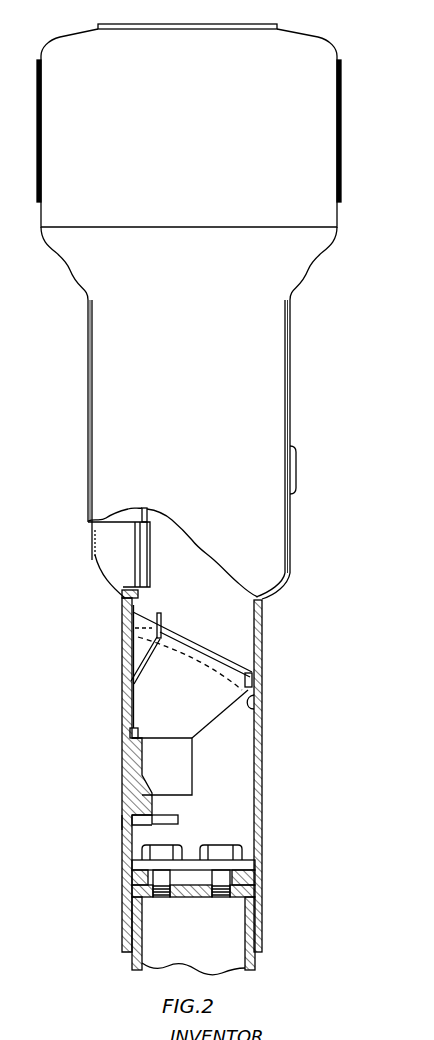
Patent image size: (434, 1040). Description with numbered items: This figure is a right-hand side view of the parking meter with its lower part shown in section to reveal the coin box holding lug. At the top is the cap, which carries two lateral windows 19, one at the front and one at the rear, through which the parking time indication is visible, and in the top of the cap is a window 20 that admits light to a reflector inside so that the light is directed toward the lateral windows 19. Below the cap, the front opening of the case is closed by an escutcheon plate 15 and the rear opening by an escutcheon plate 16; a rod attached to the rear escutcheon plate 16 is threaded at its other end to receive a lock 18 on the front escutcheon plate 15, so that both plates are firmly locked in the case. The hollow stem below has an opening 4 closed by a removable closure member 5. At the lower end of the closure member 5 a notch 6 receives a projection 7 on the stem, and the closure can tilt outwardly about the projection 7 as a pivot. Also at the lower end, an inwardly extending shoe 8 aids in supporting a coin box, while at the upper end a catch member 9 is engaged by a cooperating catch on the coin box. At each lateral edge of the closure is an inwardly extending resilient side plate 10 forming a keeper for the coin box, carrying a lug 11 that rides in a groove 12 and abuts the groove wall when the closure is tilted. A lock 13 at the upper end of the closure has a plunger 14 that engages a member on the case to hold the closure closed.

The opening 4 is at (128, 816).
The closure member 5 is at (122, 722).
The notch 6 is at (126, 811).
The projection 7 is at (146, 819).
The shoe 8 is at (178, 823).
The catch member 9 is at (161, 620).
The resilient side plate 10 is at (190, 742).
The lug 11 is at (260, 680).
The groove 12 is at (256, 706).
The lock 13 is at (102, 587).
The plunger 14 is at (148, 521).
The front escutcheon plate 15 is at (291, 370).
The rear escutcheon plate 16 is at (88, 420).
The lock 18 is at (297, 468).
The lateral window 19 is at (338, 61).
The window 20 is at (218, 26).